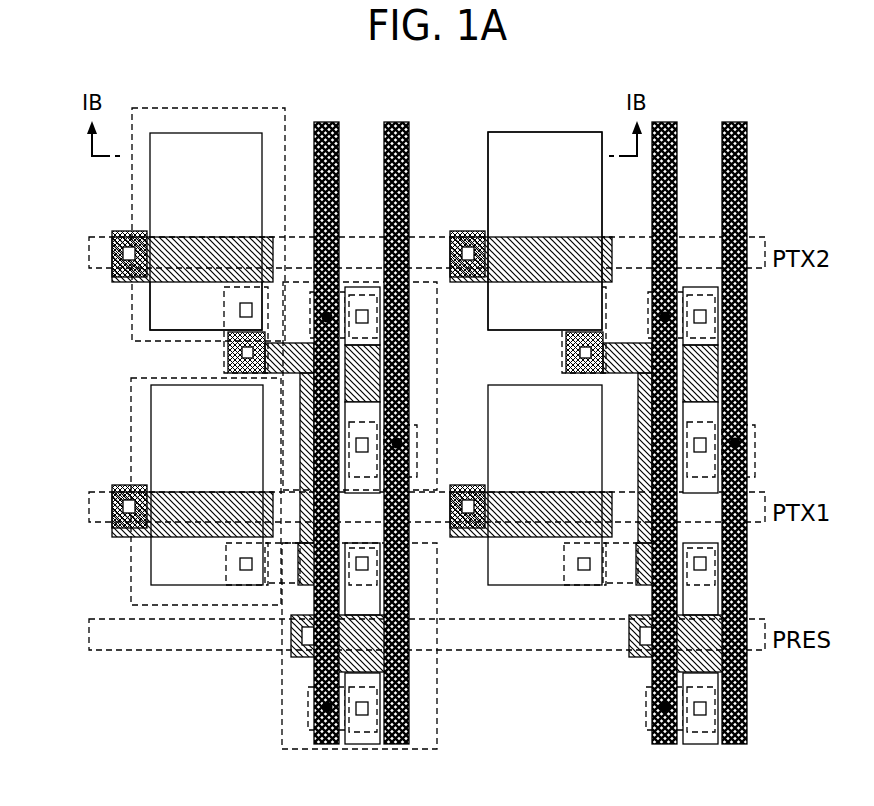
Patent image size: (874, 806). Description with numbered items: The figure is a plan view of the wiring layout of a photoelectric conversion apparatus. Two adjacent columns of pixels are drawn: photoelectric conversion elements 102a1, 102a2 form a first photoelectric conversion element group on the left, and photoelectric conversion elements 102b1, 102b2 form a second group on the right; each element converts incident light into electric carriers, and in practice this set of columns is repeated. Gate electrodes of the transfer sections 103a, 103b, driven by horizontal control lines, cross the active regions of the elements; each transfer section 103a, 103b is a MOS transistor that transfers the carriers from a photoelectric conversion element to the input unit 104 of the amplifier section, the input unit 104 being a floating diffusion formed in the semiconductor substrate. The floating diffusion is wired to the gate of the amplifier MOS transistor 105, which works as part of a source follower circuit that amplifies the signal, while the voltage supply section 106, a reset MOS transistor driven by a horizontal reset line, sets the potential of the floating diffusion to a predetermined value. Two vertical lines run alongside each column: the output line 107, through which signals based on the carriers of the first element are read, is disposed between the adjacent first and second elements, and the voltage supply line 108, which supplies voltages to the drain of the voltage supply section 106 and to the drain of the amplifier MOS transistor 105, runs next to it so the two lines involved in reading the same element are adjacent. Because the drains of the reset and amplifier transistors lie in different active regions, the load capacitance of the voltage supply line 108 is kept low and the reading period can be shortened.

The photoelectric conversion element 102a1 is at (150, 208).
The photoelectric conversion element 102a2 is at (150, 417).
The photoelectric conversion element 102b1 is at (523, 132).
The photoelectric conversion element 102b2 is at (548, 385).
The transfer section 103a is at (130, 463).
The transfer section 103b is at (132, 232).
The input unit 104 is at (173, 307).
The amplifier MOS transistor 105 is at (437, 353).
The voltage supply section 106 is at (437, 707).
The output line 107 is at (393, 122).
The voltage supply line 108 is at (325, 122).